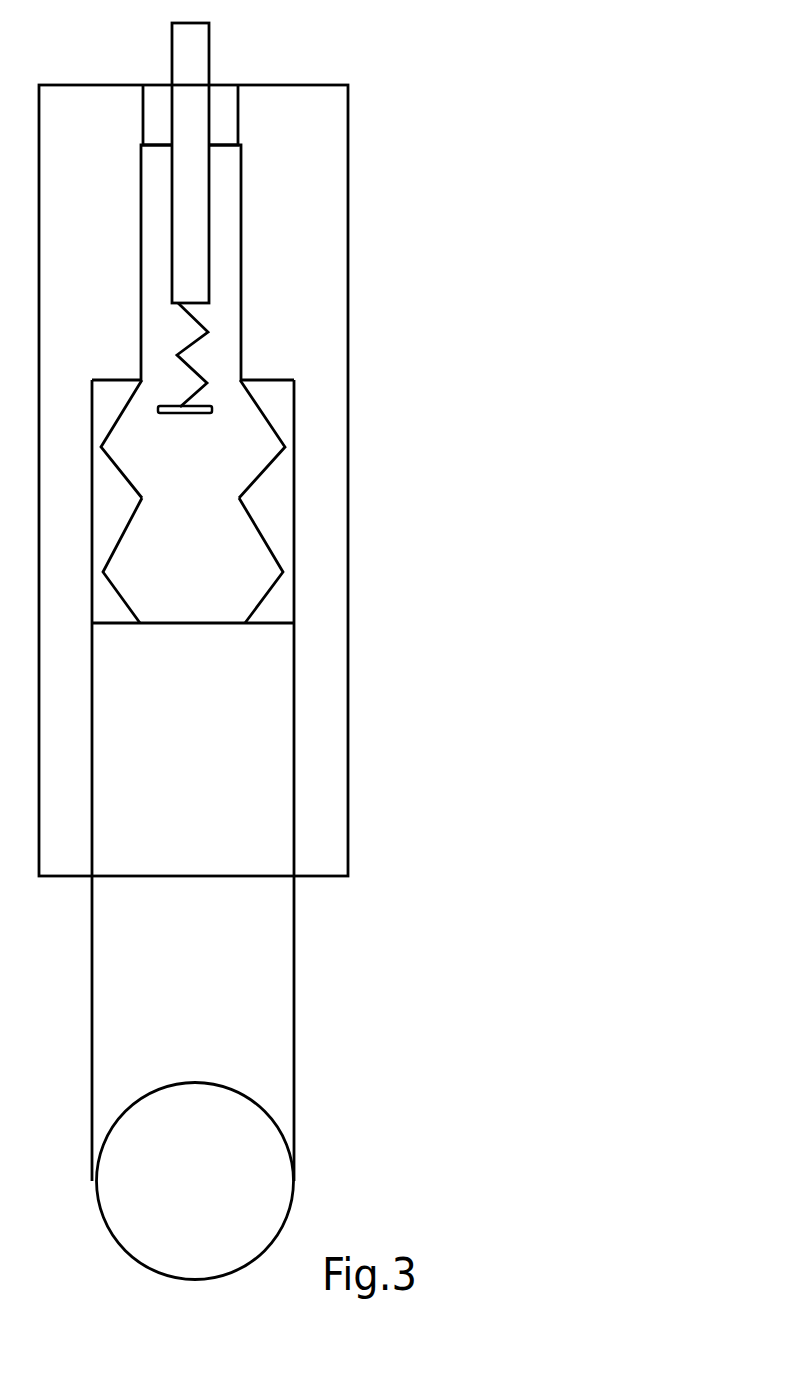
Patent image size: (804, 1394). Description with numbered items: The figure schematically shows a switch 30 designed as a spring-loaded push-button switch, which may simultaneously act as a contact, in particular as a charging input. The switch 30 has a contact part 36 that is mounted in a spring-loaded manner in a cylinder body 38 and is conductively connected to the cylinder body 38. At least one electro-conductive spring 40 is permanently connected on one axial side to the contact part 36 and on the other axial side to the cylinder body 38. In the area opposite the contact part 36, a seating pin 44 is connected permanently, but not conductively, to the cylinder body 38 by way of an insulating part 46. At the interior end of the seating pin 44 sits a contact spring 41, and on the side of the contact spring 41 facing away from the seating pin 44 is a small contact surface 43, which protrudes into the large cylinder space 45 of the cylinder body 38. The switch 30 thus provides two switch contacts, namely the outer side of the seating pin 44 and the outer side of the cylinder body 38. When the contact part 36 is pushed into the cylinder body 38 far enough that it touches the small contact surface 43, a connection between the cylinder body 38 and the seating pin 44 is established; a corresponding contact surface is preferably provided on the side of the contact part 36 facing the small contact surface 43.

The switch 30 is at (429, 79).
The contact part 36 is at (270, 1033).
The cylinder body 38 is at (349, 813).
The electro-conductive spring 40 is at (267, 465).
The contact spring 41 is at (197, 322).
The small contact surface 43 is at (182, 405).
The seating pin 44 is at (198, 60).
The large cylinder space 45 is at (273, 605).
The insulating part 46 is at (218, 110).